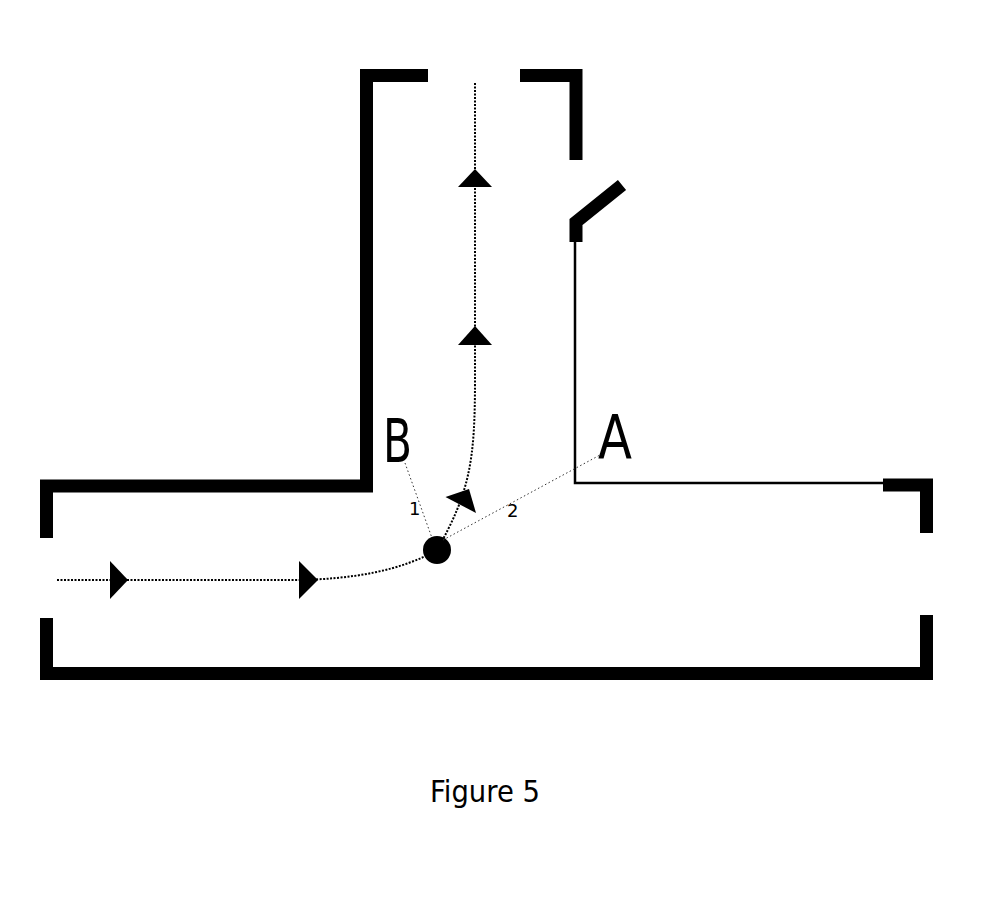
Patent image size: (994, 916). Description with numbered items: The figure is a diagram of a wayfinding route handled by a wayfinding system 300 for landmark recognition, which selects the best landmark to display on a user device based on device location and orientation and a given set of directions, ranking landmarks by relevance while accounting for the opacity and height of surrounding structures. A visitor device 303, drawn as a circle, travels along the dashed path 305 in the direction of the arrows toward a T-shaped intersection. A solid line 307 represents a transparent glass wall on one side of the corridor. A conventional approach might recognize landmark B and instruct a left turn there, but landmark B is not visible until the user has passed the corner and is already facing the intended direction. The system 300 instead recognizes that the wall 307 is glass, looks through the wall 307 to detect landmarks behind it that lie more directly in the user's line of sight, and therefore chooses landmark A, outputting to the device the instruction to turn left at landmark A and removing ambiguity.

The wayfinding system 300 is at (124, 84).
The visitor device 303 is at (460, 527).
The path 305 is at (473, 227).
The transparent glass wall 307 is at (788, 482).